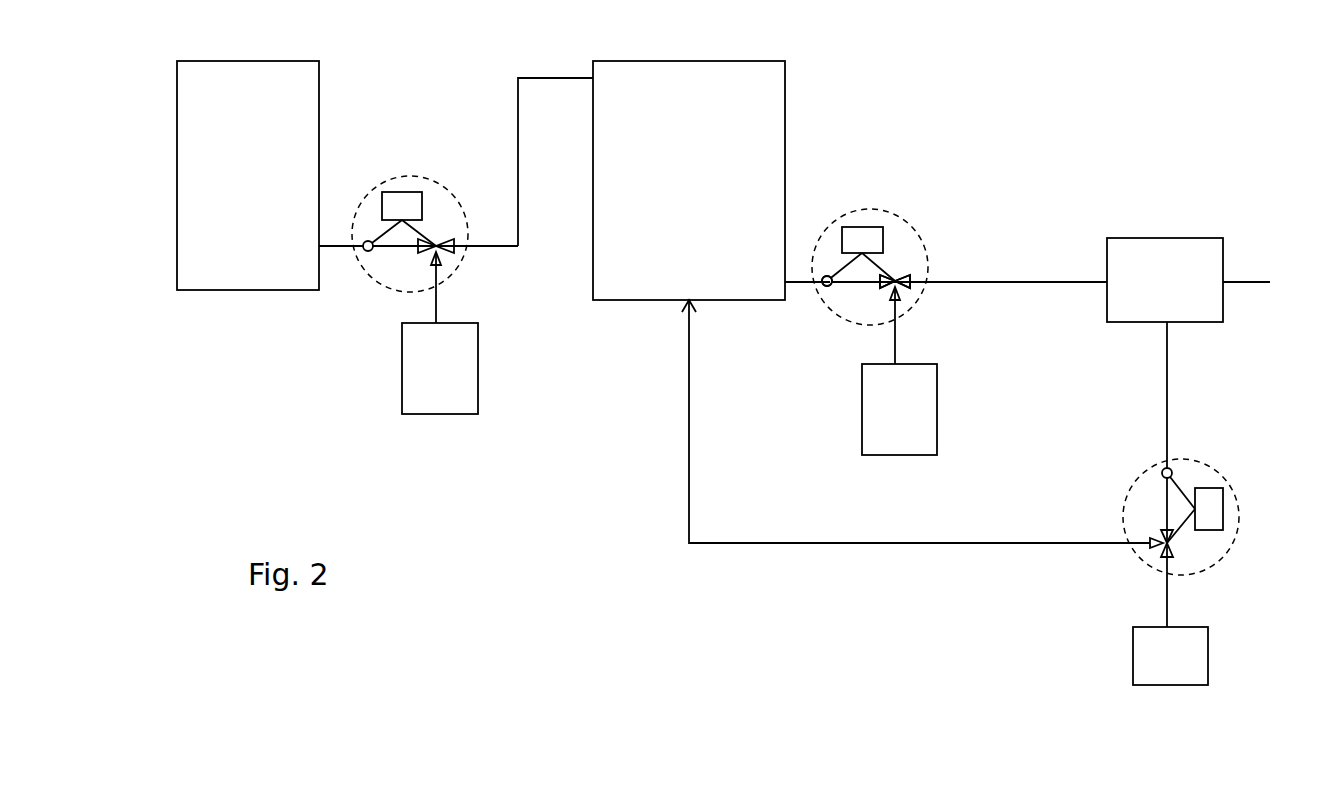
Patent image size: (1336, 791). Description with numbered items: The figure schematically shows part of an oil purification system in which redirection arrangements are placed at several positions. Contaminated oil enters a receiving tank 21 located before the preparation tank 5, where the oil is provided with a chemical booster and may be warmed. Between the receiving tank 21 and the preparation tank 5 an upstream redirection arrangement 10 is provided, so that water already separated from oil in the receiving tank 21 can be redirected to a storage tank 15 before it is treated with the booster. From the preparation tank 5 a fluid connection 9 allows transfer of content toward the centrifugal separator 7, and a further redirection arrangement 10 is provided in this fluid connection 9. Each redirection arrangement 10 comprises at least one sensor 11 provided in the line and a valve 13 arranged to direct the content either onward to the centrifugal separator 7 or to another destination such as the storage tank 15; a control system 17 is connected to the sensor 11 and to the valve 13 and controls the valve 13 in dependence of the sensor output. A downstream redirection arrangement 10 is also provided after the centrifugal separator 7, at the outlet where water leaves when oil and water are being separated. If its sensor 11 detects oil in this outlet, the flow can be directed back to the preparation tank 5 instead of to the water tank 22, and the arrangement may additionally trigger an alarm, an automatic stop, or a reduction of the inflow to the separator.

The receiving tank 21 is at (319, 90).
The preparation tank 5 is at (785, 77).
The centrifugal separator 7 is at (1158, 238).
The redirection arrangement 10 is at (450, 186).
The control system 17 is at (862, 227).
The storage tank 15 is at (478, 370).
The fluid connection 9 is at (807, 283).
The sensor 11 is at (829, 286).
The valve 13 is at (905, 286).
The water tank 22 is at (1133, 659).